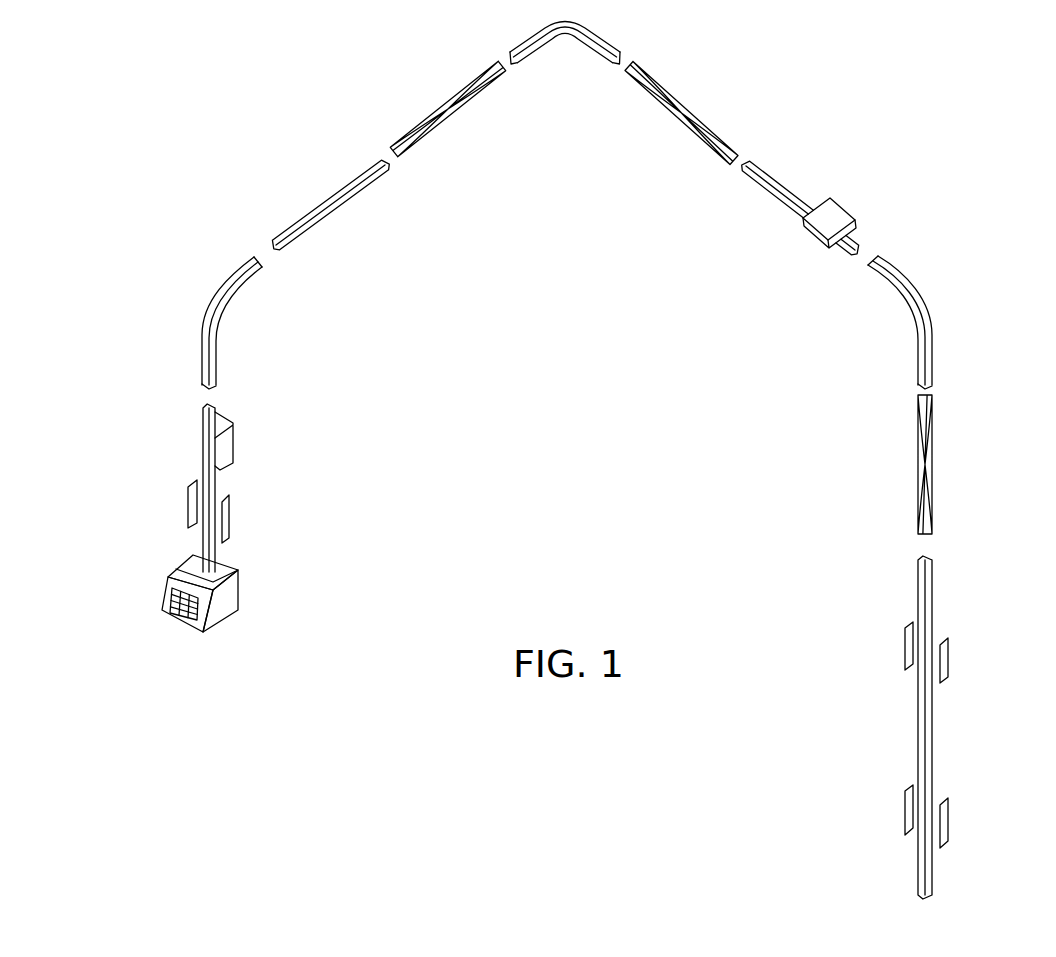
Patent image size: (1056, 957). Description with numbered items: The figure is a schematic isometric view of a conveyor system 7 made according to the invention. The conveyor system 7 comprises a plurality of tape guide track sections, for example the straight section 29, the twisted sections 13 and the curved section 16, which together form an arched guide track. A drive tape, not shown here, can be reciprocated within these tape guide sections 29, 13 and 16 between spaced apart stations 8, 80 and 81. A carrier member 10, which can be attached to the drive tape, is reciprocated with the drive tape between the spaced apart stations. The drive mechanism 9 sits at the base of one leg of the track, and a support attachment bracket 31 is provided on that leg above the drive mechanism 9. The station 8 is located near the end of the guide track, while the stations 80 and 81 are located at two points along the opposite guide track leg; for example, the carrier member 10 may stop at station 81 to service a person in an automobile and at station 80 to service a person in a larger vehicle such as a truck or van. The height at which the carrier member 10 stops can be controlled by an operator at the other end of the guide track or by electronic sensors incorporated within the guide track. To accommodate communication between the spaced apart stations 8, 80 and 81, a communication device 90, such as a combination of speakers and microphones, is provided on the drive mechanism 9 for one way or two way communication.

The conveyor system 7 is at (560, 50).
The station 8 is at (228, 517).
The drive mechanism 9 is at (194, 603).
The carrier member 10 is at (833, 215).
The tape guide track section 13 is at (453, 113).
The tape guide track section 16 is at (205, 323).
The tape guide track section 29 is at (312, 213).
The support attachment bracket 31 is at (228, 448).
The station 80 is at (943, 662).
The station 81 is at (945, 828).
The communication device 90 is at (162, 608).